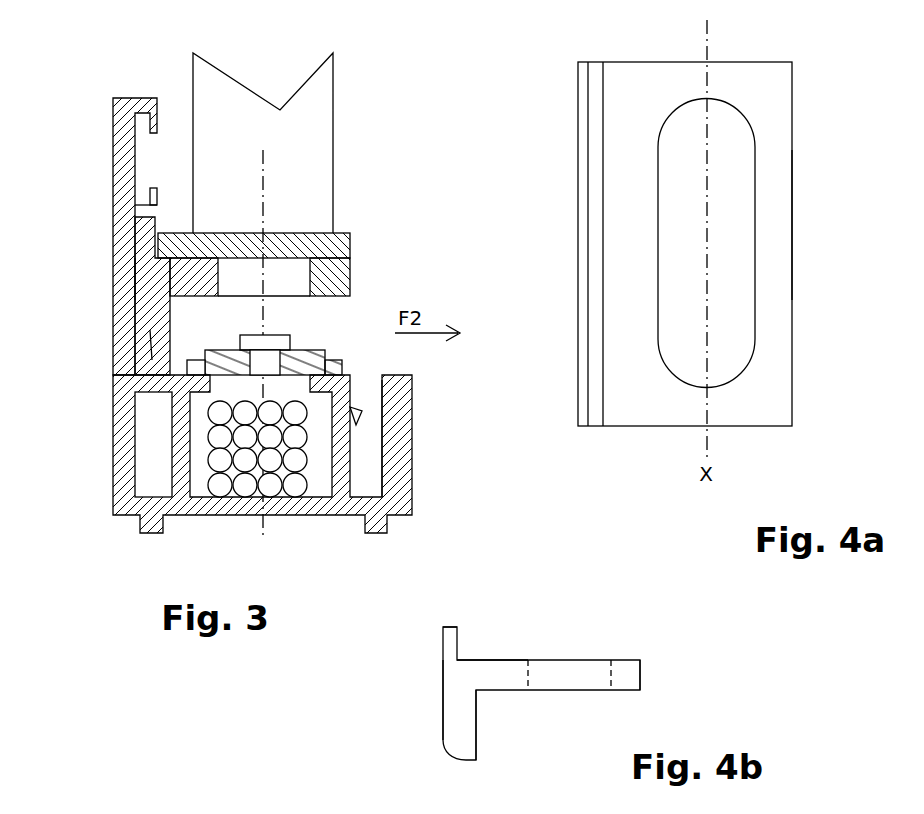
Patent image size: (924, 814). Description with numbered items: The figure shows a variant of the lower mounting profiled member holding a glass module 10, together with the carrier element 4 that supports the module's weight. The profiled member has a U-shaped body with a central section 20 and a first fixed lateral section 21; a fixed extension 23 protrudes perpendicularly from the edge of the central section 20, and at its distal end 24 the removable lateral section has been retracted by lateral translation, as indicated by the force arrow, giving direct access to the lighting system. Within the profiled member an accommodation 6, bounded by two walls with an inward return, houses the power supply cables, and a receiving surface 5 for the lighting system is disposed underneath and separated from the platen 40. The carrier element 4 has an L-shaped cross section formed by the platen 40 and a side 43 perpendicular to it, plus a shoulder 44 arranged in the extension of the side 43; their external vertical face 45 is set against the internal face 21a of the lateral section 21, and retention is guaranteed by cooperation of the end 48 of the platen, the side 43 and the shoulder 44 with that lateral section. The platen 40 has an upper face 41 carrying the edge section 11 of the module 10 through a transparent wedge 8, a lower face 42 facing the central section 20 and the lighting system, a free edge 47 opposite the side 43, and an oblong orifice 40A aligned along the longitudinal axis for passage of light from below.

In FIG. 3, the carrier element 4 is at (304, 278).
In FIG. 4a, the carrier element 4 is at (711, 280).
In FIG. 4b, the carrier element 4 is at (535, 671).
In FIG. 3, the receiving surface 5 is at (347, 373).
In FIG. 3, the accommodation 6 is at (197, 427).
In FIG. 3, the wedge 8 is at (350, 248).
In FIG. 3, the module 10 is at (303, 98).
In FIG. 3, the edge section 11 is at (272, 248).
In FIG. 3, the central section 20 is at (218, 512).
In FIG. 3, the first fixed lateral section 21 is at (115, 185).
In FIG. 3, the internal face 21a is at (150, 350).
In FIG. 3, the fixed extension 23 is at (400, 408).
In FIG. 3, the distal end 24 is at (410, 372).
In FIG. 3, the platen 40 is at (340, 266).
In FIG. 4a, the platen 40 is at (792, 325).
In FIG. 4b, the platen 40 is at (625, 668).
In FIG. 4a, the orifice 40A is at (722, 183).
In FIG. 4b, the orifice 40A is at (591, 672).
In FIG. 4a, the upper face 41 is at (755, 392).
In FIG. 4b, the upper face 41 is at (493, 660).
In FIG. 4b, the lower face 42 is at (502, 692).
In FIG. 4a, the side 43 is at (598, 420).
In FIG. 4b, the side 43 is at (457, 742).
In FIG. 4a, the shoulder 44 is at (584, 404).
In FIG. 4b, the shoulder 44 is at (447, 640).
In FIG. 3, the external vertical face 45 is at (140, 297).
In FIG. 3, the free edge 47 is at (352, 290).
In FIG. 4a, the free edge 47 is at (792, 222).
In FIG. 4b, the free edge 47 is at (640, 668).
In FIG. 3, the end of the platen 48 is at (135, 262).